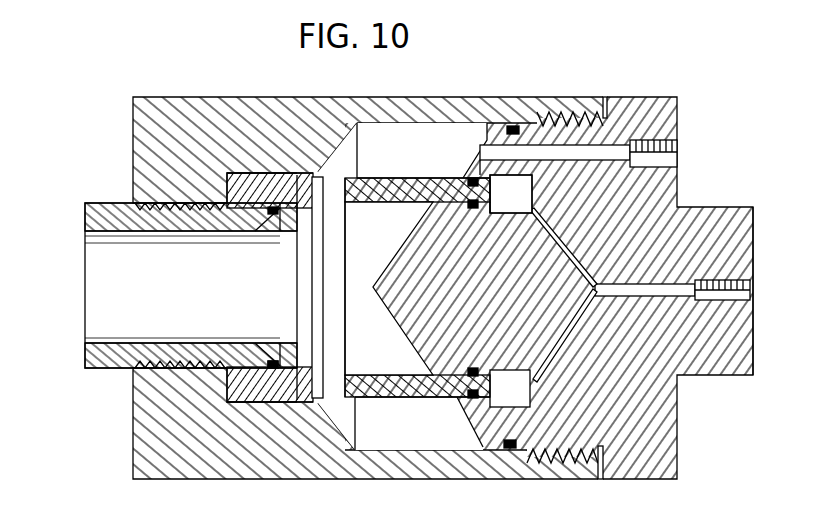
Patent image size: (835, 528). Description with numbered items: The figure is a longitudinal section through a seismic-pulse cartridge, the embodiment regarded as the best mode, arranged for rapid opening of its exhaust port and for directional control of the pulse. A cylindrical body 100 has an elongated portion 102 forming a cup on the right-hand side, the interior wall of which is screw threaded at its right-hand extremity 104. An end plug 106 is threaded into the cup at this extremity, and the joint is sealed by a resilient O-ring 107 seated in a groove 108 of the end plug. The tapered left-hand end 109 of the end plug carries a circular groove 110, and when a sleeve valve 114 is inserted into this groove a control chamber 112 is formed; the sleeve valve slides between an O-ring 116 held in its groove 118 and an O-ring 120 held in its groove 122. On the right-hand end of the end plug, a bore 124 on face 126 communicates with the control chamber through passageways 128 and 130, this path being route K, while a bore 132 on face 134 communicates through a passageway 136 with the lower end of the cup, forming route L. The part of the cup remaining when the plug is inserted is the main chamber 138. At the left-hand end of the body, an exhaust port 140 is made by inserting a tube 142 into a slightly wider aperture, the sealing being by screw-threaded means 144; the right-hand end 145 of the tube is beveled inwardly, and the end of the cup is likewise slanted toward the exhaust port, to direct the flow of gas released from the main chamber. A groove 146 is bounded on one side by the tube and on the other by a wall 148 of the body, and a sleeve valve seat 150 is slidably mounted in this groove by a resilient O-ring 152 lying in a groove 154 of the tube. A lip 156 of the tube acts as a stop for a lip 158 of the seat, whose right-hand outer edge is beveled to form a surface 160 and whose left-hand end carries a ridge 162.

The cylindrical body 100 is at (305, 118).
The elongated portion 102 is at (434, 97).
The screw-threaded right-hand extremity 104 is at (549, 106).
The end plug 106 is at (688, 207).
The resilient O-ring 107 is at (513, 126).
The groove 108 is at (523, 442).
The tapered left-hand end 109 is at (400, 255).
The circular groove 110 is at (433, 205).
The control chamber 112 is at (540, 186).
The sleeve valve 114 is at (397, 398).
The O-ring 116 is at (474, 208).
The groove 118 is at (494, 205).
The O-ring 120 is at (476, 177).
The groove 122 is at (470, 196).
The bore 124 is at (752, 290).
The face 126 is at (757, 244).
The passageway 128 is at (738, 320).
The passageway 130 is at (572, 318).
The bore 132 is at (682, 152).
The face 134 is at (682, 172).
The passageway 136 is at (575, 145).
The main chamber 138 is at (423, 151).
The exhaust port 140 is at (84, 292).
The tube 142 is at (84, 362).
The screw-threaded sealing means 144 is at (128, 392).
The right-hand end of tube 145 is at (291, 330).
The groove 146 is at (283, 172).
The wall 148 is at (280, 404).
The sleeve valve seat 150 is at (258, 404).
The resilient O-ring 152 is at (276, 370).
The groove 154 is at (268, 362).
The lip 156 is at (274, 232).
The lip 158 is at (262, 216).
The surface 160 is at (318, 176).
The ridge 162 is at (222, 182).